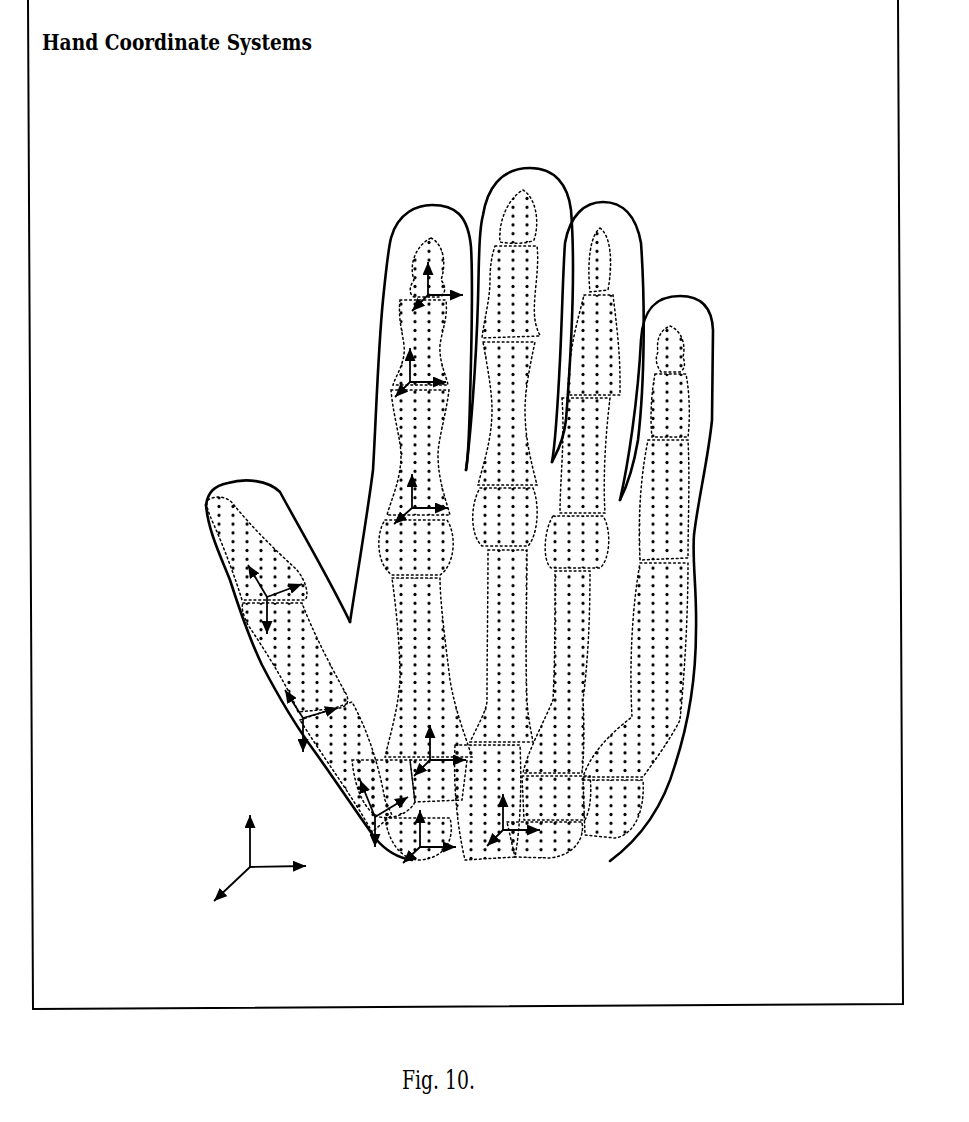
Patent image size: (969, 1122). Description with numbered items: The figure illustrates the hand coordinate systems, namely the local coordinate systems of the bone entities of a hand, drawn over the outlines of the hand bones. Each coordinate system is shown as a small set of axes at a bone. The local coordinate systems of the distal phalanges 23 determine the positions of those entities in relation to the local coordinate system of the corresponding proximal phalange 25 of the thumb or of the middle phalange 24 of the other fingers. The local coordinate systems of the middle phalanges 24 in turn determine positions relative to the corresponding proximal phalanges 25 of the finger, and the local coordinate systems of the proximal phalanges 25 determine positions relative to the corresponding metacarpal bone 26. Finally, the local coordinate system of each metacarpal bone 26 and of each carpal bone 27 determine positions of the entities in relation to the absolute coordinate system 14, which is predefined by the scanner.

The absolute coordinate system 14 is at (250, 867).
The distal phalanges 23 is at (428, 295).
The middle phalanges 24 is at (410, 382).
The proximal phalanges 25 is at (412, 508).
The metacarpal bone 26 is at (430, 760).
The carpal bone 27 is at (420, 847).